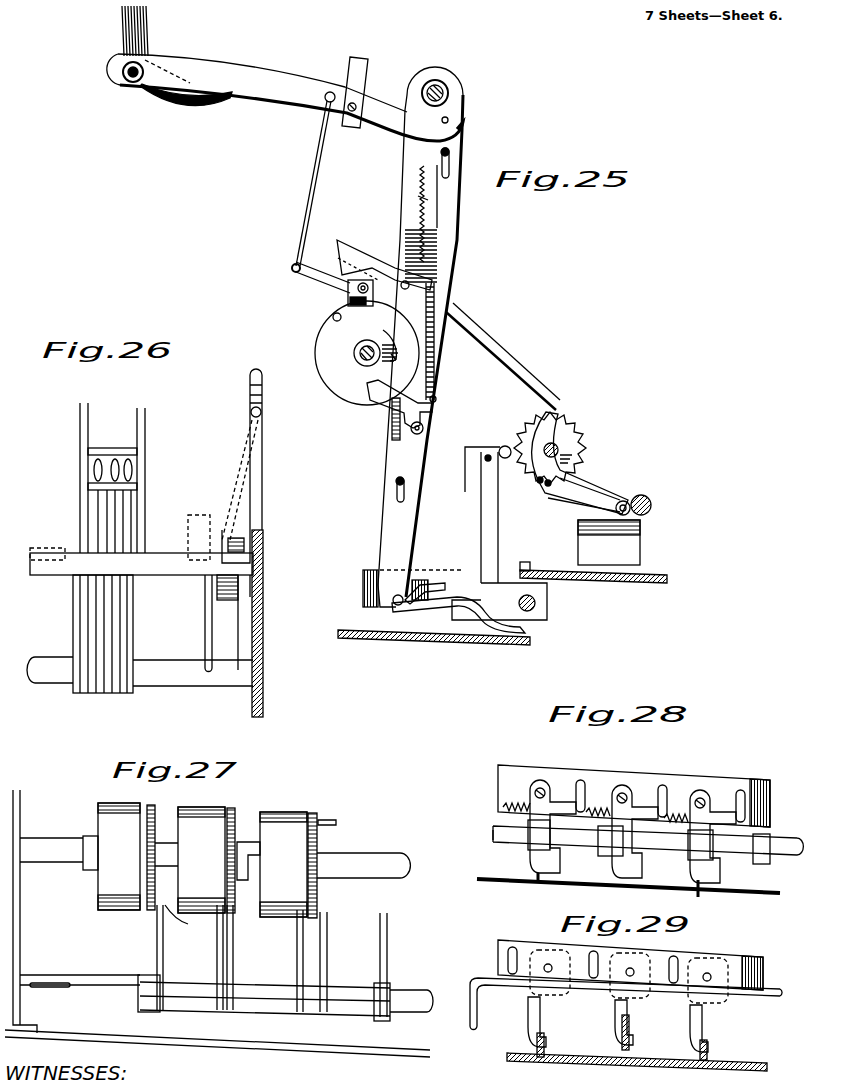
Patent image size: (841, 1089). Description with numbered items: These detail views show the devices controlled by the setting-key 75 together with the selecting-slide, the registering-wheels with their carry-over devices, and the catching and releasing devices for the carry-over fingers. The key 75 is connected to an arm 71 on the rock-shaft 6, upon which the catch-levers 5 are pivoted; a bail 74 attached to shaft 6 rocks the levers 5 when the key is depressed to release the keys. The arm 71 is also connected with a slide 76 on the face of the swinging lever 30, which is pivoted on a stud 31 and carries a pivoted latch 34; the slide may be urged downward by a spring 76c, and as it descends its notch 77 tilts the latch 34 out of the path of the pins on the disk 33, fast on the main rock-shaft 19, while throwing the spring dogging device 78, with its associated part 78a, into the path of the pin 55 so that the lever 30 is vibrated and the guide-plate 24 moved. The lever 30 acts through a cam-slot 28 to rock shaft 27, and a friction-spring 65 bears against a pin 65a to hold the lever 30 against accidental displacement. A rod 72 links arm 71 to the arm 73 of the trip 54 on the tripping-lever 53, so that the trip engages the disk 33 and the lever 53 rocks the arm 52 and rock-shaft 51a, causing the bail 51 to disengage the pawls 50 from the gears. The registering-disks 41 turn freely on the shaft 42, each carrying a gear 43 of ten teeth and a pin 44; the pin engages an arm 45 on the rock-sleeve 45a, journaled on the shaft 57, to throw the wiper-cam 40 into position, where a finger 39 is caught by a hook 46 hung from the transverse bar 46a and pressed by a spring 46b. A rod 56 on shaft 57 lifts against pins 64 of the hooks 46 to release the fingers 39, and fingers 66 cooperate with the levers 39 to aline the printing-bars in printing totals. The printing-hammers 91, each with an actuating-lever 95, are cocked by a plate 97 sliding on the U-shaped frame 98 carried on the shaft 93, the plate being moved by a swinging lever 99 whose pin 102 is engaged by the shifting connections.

In FIG. 25, the catch-lever 5 is at (200, 104).
In FIG. 25, the rock-shaft 6 is at (123, 72).
In FIG. 25, the main actuating rock-shaft 19 is at (360, 366).
In FIG. 25, the plate 24 is at (482, 447).
In FIG. 25, the rock-shaft 27 is at (540, 601).
In FIG. 25, the cam-slot 28 is at (440, 580).
In FIG. 25, the swinging lever 30 is at (407, 181).
In FIG. 25, the stud 31 is at (450, 93).
In FIG. 25, the disk 33 is at (320, 348).
In FIG. 25, the latch 34 is at (378, 266).
In FIG. 28, the finger 39 is at (536, 872).
In FIG. 29, the finger 39 is at (545, 1045).
In FIG. 27, the wiper-cam 40 is at (217, 965).
In FIG. 25, the registering-disk 41 is at (572, 422).
In FIG. 27, the registering-disk 41 is at (108, 808).
In FIG. 27, the shaft 42 is at (392, 855).
In FIG. 25, the gear 43 is at (590, 442).
In FIG. 27, the gear 43 is at (151, 806).
In FIG. 25, the pin 44 is at (539, 484).
In FIG. 27, the pin 44 is at (247, 840).
In FIG. 27, the arm 45 is at (157, 955).
In FIG. 27, the rock-sleeve 45a is at (188, 1000).
In FIG. 28, the rock-sleeve 45a is at (778, 805).
In FIG. 28, the hook 46 is at (560, 866).
In FIG. 29, the hook 46 is at (528, 1015).
In FIG. 28, the transverse bar 46a is at (760, 785).
In FIG. 29, the transverse bar 46a is at (545, 945).
In FIG. 28, the spring 46b is at (512, 803).
In FIG. 25, the pawl 50 is at (570, 503).
In FIG. 25, the bail 51 is at (627, 501).
In FIG. 25, the rock-shaft 51a is at (652, 504).
In FIG. 25, the arm 52 is at (592, 478).
In FIG. 25, the tripping-lever 53 is at (524, 372).
In FIG. 25, the pawl 54 is at (346, 292).
In FIG. 25, the notch 55 is at (333, 317).
In FIG. 29, the rod 56 is at (774, 985).
In FIG. 27, the rock-shaft 57 is at (414, 1000).
In FIG. 28, the rock-shaft 57 is at (477, 822).
In FIG. 28, the pin 64 is at (574, 790).
In FIG. 29, the pin 64 is at (510, 962).
In FIG. 25, the friction-spring 65 is at (433, 612).
In FIG. 25, the pin 65a is at (392, 599).
In FIG. 25, the finger 66 is at (481, 520).
In FIG. 25, the arm 71 is at (295, 82).
In FIG. 25, the rod 72 is at (314, 188).
In FIG. 25, the arm 73 is at (330, 272).
In FIG. 25, the bail 74 is at (126, 25).
In FIG. 25, the error-key 75 is at (362, 62).
In FIG. 25, the slide 76 is at (447, 212).
In FIG. 25, the spring 76c is at (418, 198).
In FIG. 25, the notch 77 is at (450, 285).
In FIG. 25, the spring dogging device 78 is at (386, 410).
In FIG. 25, the pin 78a is at (437, 400).
In FIG. 26, the printing-hammer 91 is at (93, 468).
In FIG. 26, the shaft 93 is at (185, 686).
In FIG. 26, the actuating-lever 95 is at (92, 504).
In FIG. 26, the plate 97 is at (141, 557).
In FIG. 26, the U-shaped frame 98 is at (171, 560).
In FIG. 26, the swinging lever 99 is at (250, 458).
In FIG. 26, the pin 102 is at (242, 544).